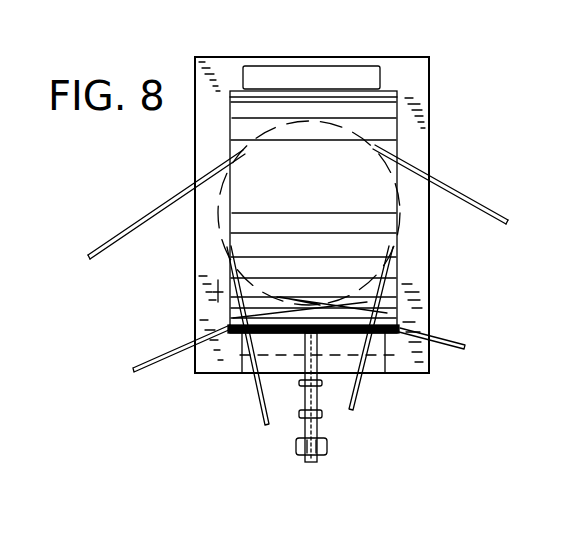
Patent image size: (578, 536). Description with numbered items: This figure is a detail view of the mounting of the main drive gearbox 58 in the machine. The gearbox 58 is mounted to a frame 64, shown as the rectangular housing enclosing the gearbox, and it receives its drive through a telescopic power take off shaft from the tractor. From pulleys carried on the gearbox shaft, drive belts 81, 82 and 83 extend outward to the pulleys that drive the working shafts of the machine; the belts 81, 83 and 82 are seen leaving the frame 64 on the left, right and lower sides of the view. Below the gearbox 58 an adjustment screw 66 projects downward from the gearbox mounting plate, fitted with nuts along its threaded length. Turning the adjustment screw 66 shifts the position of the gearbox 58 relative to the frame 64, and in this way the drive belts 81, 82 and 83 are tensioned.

The frame 64 is at (408, 87).
The main drive gearbox 58 is at (392, 290).
The drive belt 81 is at (118, 232).
The drive belt 83 is at (470, 195).
The drive belt 82 is at (365, 392).
The adjustment screw 66 is at (318, 425).